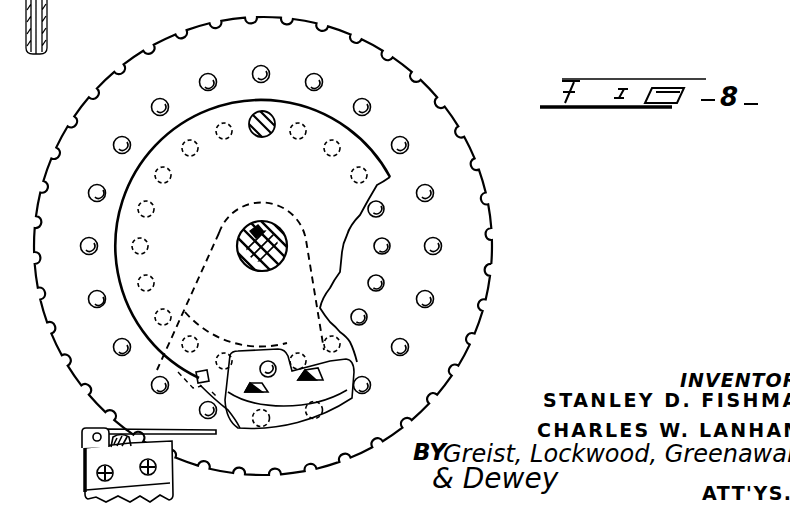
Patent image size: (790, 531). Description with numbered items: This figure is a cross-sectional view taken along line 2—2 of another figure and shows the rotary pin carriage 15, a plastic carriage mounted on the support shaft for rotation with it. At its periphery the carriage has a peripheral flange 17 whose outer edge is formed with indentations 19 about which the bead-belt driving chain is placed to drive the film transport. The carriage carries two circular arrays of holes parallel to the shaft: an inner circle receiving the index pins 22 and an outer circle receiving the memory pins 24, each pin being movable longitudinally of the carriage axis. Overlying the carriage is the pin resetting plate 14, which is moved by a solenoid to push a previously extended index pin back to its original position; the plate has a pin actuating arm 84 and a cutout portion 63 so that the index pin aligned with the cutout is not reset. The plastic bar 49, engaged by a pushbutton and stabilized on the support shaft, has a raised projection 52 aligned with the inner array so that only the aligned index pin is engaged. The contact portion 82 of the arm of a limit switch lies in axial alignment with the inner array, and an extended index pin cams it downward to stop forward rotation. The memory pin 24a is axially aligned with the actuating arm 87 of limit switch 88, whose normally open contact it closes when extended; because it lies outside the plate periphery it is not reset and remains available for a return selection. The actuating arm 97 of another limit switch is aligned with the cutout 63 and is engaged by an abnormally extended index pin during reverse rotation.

The shaft 2 is at (307, 236).
The pin resetting plate 14 is at (337, 202).
The rotary pin carriage 15 is at (497, 272).
The peripheral flange 17 is at (422, 79).
The indentations 19 is at (75, 125).
The index pins 22 is at (168, 183).
The memory pins 24 is at (163, 100).
The memory pin 24a is at (211, 420).
The plastic bar 49 is at (216, 272).
The raised projection 52 is at (332, 314).
The cutout portion 63 is at (268, 360).
The contact portion 82 is at (296, 368).
The pin actuating arm 84 is at (262, 137).
The actuating arm 87 is at (186, 432).
The limit switch 88 is at (90, 455).
The actuating arm 97 is at (284, 380).